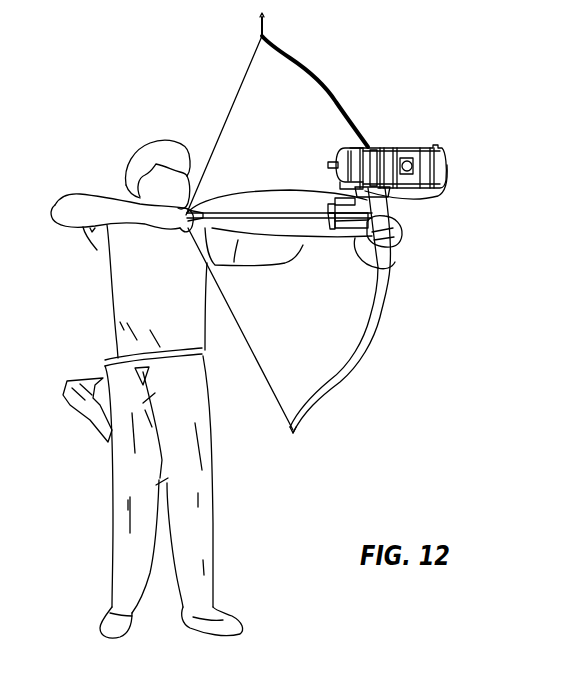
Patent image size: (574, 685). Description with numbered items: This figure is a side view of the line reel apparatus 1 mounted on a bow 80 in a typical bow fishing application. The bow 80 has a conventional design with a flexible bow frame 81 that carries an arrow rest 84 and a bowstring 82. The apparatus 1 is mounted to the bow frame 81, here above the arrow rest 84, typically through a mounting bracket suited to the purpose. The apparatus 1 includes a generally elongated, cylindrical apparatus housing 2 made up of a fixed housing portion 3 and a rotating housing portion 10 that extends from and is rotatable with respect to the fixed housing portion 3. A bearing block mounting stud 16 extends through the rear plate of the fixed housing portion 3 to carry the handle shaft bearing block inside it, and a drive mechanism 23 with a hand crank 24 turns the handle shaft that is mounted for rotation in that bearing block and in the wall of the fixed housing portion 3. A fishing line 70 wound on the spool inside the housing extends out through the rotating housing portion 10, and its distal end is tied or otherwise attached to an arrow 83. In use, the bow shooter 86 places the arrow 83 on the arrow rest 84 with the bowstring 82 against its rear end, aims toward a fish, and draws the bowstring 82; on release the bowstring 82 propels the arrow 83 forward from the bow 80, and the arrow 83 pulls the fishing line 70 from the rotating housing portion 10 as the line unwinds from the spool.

The line reel apparatus 1 is at (371, 212).
The apparatus housing 2 is at (339, 144).
The fixed housing portion 3 is at (338, 185).
The rotating housing portion 10 is at (425, 143).
The bearing block mounting stud 16 is at (328, 165).
The drive mechanism 23 is at (327, 227).
The hand crank 24 is at (395, 262).
The fishing line 70 is at (435, 198).
The bow 80 is at (396, 223).
The bow frame 81 is at (292, 52).
The bowstring 82 is at (238, 80).
The arrow 83 is at (267, 218).
The arrow rest 84 is at (397, 227).
The bow shooter 86 is at (130, 298).